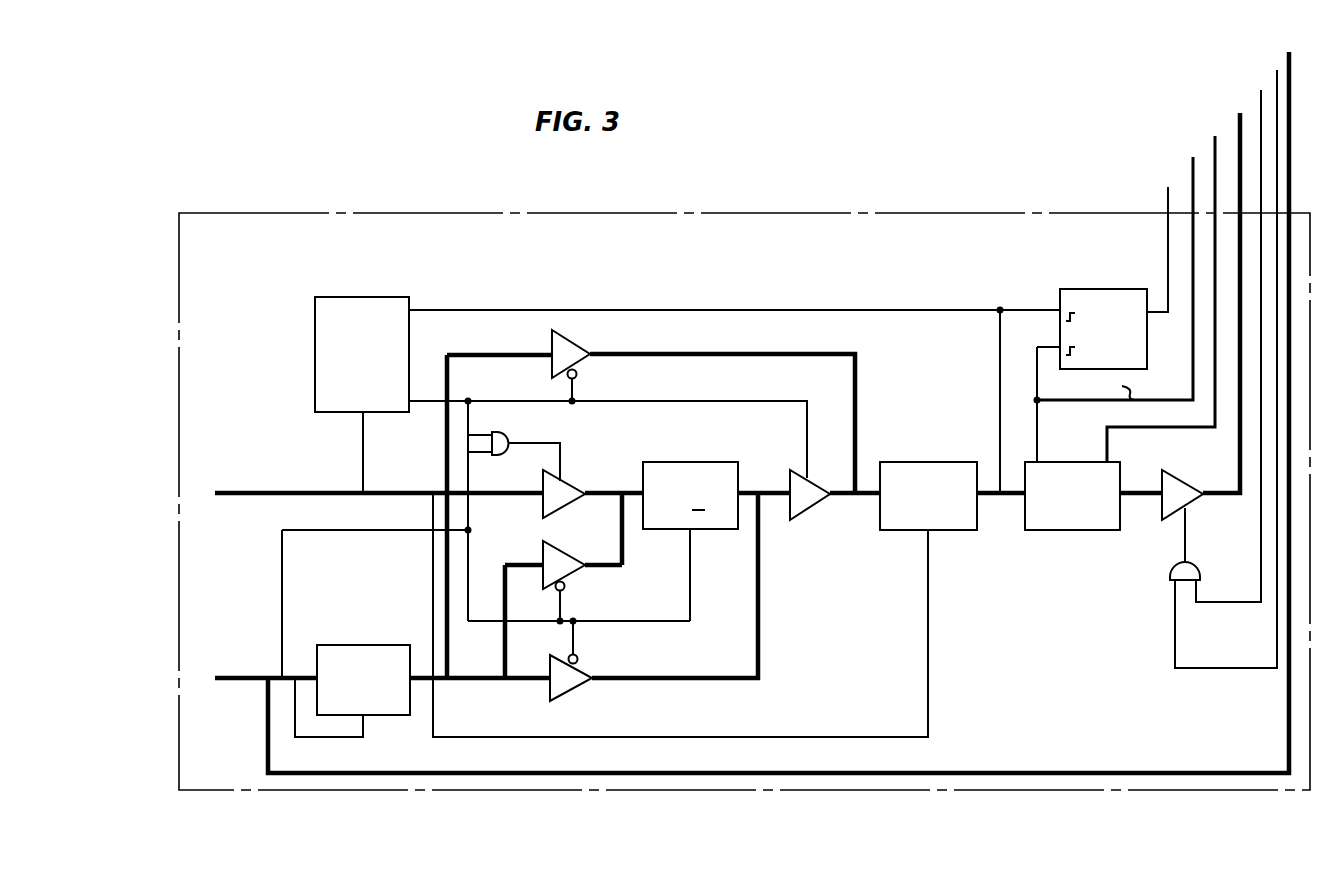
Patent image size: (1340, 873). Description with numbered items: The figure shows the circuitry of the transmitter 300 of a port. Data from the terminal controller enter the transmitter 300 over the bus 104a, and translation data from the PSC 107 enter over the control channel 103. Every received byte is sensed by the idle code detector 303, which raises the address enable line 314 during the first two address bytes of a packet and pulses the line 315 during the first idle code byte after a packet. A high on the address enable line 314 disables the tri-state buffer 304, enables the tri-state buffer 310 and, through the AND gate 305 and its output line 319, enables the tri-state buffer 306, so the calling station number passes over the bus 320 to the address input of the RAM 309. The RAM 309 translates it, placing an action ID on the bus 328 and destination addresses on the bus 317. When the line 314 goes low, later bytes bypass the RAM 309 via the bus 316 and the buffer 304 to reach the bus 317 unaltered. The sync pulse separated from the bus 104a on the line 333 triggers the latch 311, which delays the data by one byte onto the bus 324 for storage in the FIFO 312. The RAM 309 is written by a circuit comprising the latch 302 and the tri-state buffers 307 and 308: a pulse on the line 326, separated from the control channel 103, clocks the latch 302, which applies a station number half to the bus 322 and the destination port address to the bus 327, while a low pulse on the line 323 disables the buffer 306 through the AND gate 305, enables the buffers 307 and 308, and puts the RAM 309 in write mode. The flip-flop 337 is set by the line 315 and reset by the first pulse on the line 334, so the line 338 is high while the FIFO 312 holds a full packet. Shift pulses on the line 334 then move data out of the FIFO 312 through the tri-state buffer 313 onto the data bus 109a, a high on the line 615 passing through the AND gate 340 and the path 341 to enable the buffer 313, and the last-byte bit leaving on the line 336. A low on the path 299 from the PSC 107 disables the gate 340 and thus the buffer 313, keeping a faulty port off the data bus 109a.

The transmitter 300 is at (271, 213).
The latch 302 is at (379, 645).
The idle code detector 303 is at (362, 297).
The tri-state buffer 304 is at (580, 346).
The AND gate 305 is at (507, 438).
The tri-state buffer 306 is at (543, 486).
The tri-state buffer 307 is at (558, 553).
The tri-state buffer 308 is at (586, 672).
The RAM 309 is at (682, 462).
The tri-state buffer 310 is at (821, 508).
The latch 311 is at (936, 462).
The FIFO 312 is at (1068, 530).
The tri-state buffer 313 is at (1173, 480).
The address enable line 314 is at (601, 401).
The line 315 is at (648, 311).
The bus 316 is at (490, 355).
The bus 317 is at (755, 353).
The line 319 is at (563, 453).
The bus 320 is at (600, 493).
The bus 322 is at (531, 565).
The line 323 is at (666, 621).
The bus 324 is at (990, 498).
The line 326 is at (333, 737).
The bus 327 is at (534, 681).
The bus 328 is at (760, 655).
The line 333 is at (928, 698).
The line 334 is at (1047, 347).
The line 336 is at (1107, 445).
The flip-flop 337 is at (1111, 289).
The line 338 is at (1168, 198).
The AND gate 340 is at (1198, 576).
The path 341 is at (1186, 540).
The control channel 103 is at (261, 678).
The bus 104a is at (279, 493).
The data bus 109a is at (1240, 120).
The PSC 107 is at (1289, 60).
The path 299 is at (1175, 659).
The line 615 is at (1232, 602).